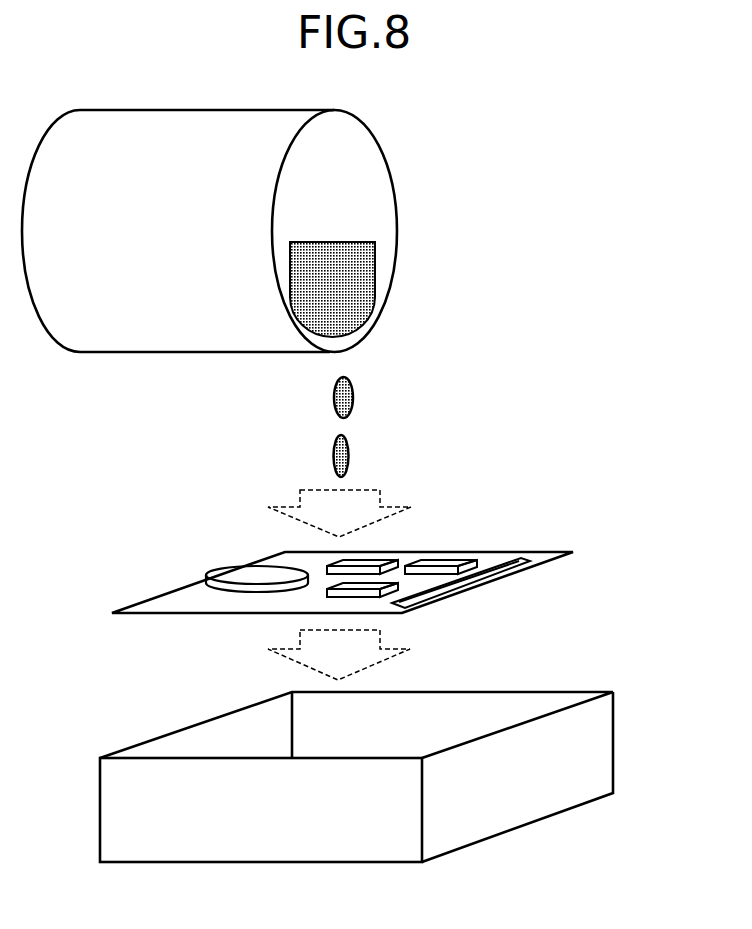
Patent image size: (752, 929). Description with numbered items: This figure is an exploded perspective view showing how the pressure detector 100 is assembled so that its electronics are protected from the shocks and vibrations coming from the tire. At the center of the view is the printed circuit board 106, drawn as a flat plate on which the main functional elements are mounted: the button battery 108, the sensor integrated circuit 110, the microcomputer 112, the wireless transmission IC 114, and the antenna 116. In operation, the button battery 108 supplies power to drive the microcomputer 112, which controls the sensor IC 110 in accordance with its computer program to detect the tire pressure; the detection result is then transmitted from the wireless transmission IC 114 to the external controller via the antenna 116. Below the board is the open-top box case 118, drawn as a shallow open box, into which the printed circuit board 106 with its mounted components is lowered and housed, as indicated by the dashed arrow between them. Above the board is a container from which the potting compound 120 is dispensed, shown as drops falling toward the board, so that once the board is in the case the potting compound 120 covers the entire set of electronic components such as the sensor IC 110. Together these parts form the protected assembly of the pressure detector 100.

The pressure detector 100 is at (622, 488).
The printed circuit board 106 is at (167, 607).
The button battery 108 is at (233, 572).
The sensor integrated circuit 110 is at (382, 559).
The microcomputer 112 is at (327, 592).
The wireless transmission IC 114 is at (458, 561).
The antenna 116 is at (482, 583).
The open-top box case 118 is at (613, 757).
The potting compound 120 is at (350, 275).